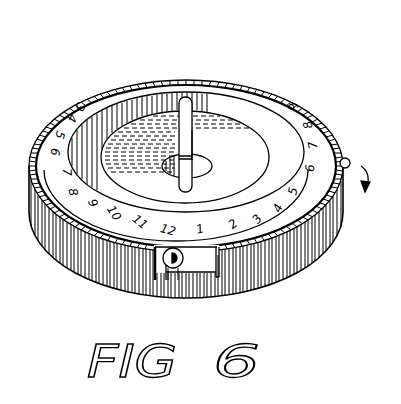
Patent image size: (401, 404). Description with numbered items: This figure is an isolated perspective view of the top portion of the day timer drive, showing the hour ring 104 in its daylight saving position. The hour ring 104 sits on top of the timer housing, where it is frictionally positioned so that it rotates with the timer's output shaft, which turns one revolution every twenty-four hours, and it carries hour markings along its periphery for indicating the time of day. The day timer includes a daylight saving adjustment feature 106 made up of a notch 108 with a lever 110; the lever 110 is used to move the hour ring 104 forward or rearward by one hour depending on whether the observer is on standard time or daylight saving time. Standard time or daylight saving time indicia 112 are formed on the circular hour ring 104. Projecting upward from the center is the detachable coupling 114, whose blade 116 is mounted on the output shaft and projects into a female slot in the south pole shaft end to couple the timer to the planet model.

The hour ring 104 is at (287, 112).
The daylight saving adjustment feature 106 is at (186, 239).
The notch 108 is at (333, 148).
The lever 110 is at (348, 160).
The standard time or daylight saving time indicia 112 is at (182, 272).
The detachable coupling 114 is at (191, 96).
The blade 116 is at (192, 146).